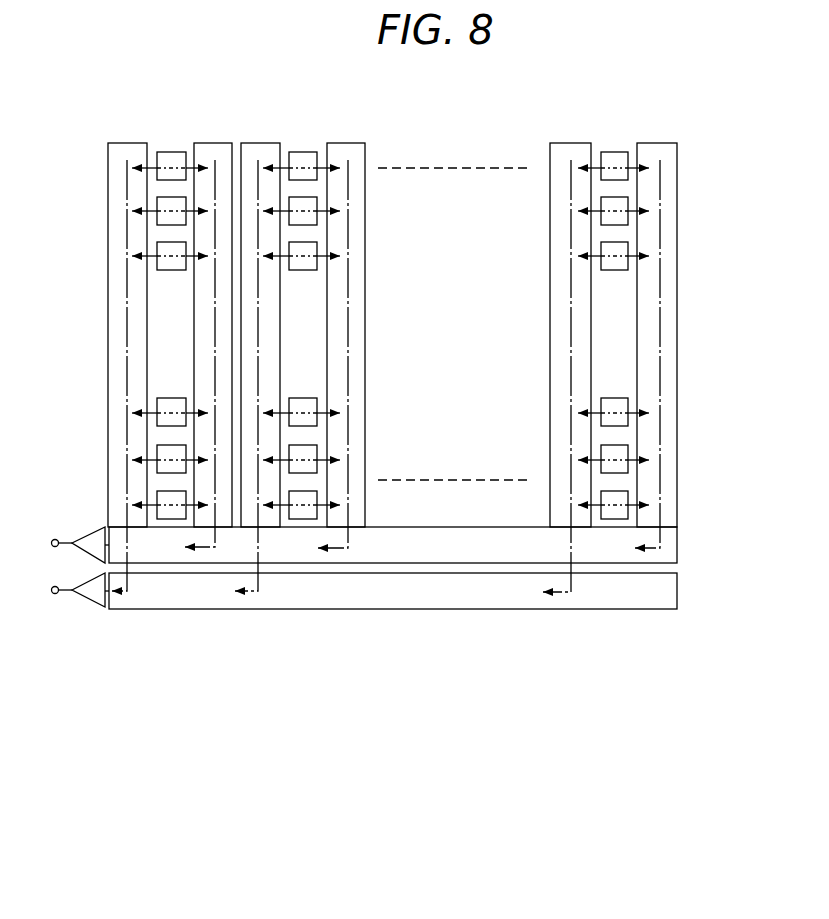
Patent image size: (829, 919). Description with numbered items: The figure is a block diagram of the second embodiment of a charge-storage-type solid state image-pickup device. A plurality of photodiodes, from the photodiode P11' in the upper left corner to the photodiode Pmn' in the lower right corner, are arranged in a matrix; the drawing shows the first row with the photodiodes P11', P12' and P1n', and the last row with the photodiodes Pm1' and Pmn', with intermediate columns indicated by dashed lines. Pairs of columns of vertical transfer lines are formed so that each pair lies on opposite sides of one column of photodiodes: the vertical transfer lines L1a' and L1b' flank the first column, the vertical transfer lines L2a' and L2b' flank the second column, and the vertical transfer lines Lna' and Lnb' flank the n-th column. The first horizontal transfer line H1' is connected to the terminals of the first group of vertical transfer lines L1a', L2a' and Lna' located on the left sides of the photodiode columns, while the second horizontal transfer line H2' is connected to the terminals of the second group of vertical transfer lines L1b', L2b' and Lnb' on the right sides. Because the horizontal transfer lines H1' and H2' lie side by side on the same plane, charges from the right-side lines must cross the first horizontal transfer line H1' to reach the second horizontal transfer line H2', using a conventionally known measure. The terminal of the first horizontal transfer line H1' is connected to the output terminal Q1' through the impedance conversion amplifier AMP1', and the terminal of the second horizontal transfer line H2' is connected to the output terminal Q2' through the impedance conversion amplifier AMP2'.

The vertical transfer line L1a' is at (127, 343).
The vertical transfer line L1b' is at (208, 321).
The vertical transfer line L2a' is at (257, 343).
The vertical transfer line L2b' is at (341, 322).
The vertical transfer line Lna' is at (567, 344).
The vertical transfer line Lnb' is at (656, 322).
The photodiode P11' is at (170, 145).
The photodiode P12' is at (306, 145).
The photodiode P1n' is at (618, 145).
The photodiode Pm1' is at (120, 487).
The photodiode Pmn' is at (666, 493).
The first horizontal transfer line H1' is at (418, 550).
The second horizontal transfer line H2' is at (418, 594).
The impedance conversion amplifier AMP1' is at (76, 528).
The impedance conversion amplifier AMP2' is at (87, 614).
The output terminal Q1' is at (45, 551).
The output terminal Q2' is at (43, 596).